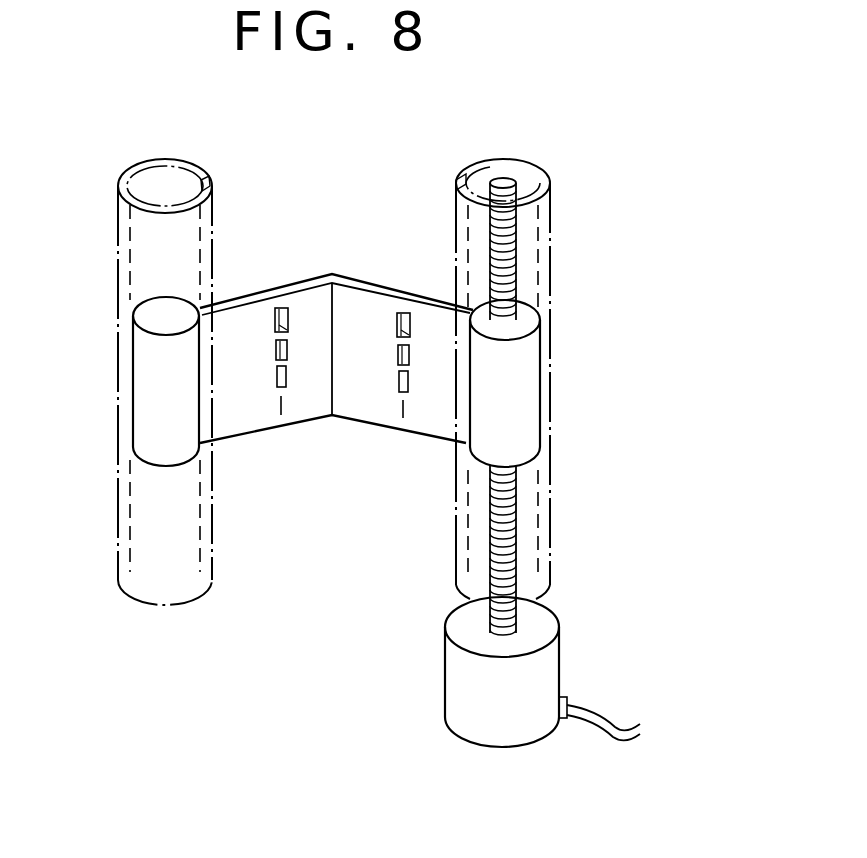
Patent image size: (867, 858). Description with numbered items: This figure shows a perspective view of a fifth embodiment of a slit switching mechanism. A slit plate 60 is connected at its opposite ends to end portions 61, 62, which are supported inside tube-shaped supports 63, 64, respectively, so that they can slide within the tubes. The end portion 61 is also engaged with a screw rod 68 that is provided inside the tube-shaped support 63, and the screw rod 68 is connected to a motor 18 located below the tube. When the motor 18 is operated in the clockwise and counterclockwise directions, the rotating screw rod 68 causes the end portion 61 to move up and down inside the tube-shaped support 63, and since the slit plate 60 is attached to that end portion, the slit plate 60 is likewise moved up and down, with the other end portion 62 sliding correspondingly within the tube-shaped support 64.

The motor 18 is at (463, 681).
The slit plate 60 is at (372, 407).
The end portion 61 is at (522, 395).
The end portion 62 is at (160, 394).
The tube-shaped support 63 is at (550, 185).
The tube-shaped support 64 is at (210, 185).
The screw rod 68 is at (517, 262).